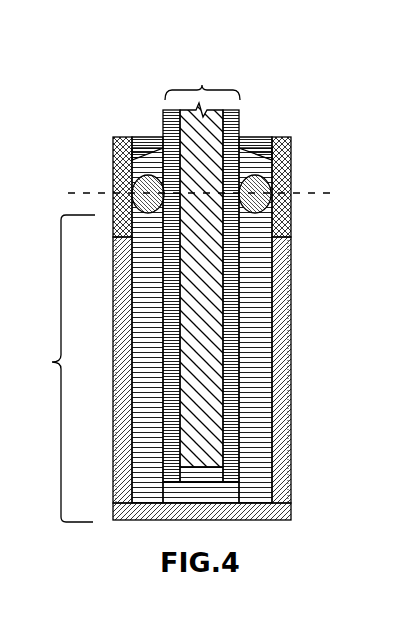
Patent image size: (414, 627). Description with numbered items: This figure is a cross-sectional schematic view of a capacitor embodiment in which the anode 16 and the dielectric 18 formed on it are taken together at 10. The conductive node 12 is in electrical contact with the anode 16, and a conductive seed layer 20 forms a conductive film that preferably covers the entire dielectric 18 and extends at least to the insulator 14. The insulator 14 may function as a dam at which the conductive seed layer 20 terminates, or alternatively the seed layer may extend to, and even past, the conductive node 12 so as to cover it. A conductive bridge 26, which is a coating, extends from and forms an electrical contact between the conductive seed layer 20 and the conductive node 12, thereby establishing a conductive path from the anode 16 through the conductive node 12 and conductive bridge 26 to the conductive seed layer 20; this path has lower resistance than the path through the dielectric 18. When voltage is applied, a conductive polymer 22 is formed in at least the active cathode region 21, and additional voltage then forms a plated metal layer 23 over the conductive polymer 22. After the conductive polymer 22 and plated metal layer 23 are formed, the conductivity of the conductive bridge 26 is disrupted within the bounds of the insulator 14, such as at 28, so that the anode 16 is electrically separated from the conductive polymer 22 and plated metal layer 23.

The anode with dielectric 10 is at (202, 88).
The conductive node 12 is at (148, 144).
The insulator 14 is at (142, 200).
The anode 16 is at (205, 132).
The dielectric 18 is at (165, 112).
The conductive seed layer 20 is at (262, 297).
The active cathode region 21 is at (61, 368).
The conductive polymer 22 is at (285, 365).
The plated metal layer 23 is at (290, 486).
The conductive bridge 26 is at (120, 178).
The bridge disruption location 28 is at (68, 194).